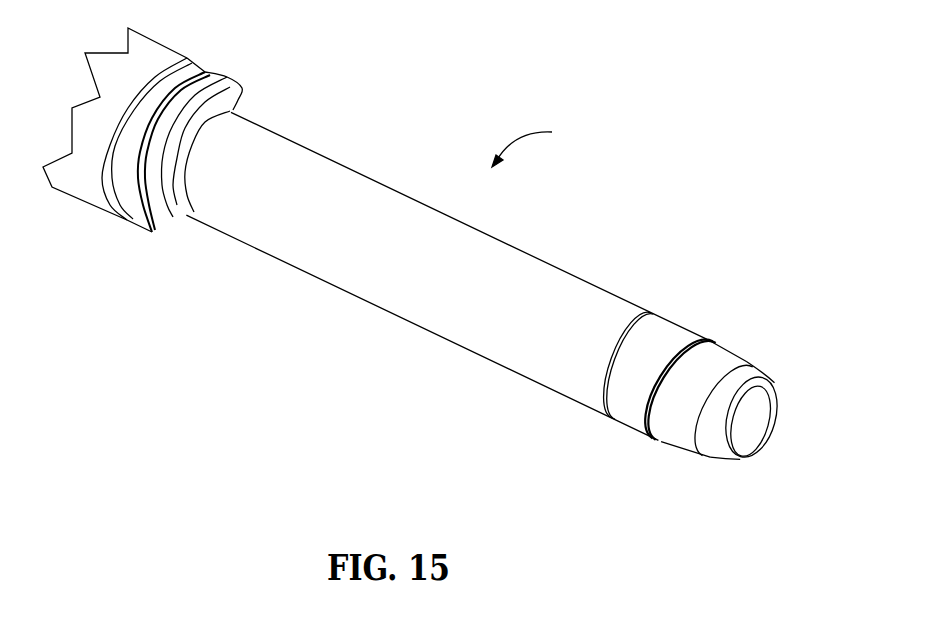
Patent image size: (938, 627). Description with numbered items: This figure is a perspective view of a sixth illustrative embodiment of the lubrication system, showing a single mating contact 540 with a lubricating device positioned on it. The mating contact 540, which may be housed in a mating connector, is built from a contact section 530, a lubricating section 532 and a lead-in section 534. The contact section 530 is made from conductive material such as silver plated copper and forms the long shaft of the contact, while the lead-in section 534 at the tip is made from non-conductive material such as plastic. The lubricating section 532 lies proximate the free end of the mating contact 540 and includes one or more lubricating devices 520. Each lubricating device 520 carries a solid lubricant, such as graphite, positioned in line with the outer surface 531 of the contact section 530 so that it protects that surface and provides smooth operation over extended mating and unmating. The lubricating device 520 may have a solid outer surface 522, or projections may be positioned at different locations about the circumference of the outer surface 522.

The contact section 530 is at (442, 278).
The outer surface 531 is at (382, 293).
The lubricating section 532 is at (675, 320).
The outer surface 522 is at (663, 357).
The lubricating device 520 is at (683, 440).
The lead-in section 534 is at (743, 358).
The mating contact 540 is at (546, 141).